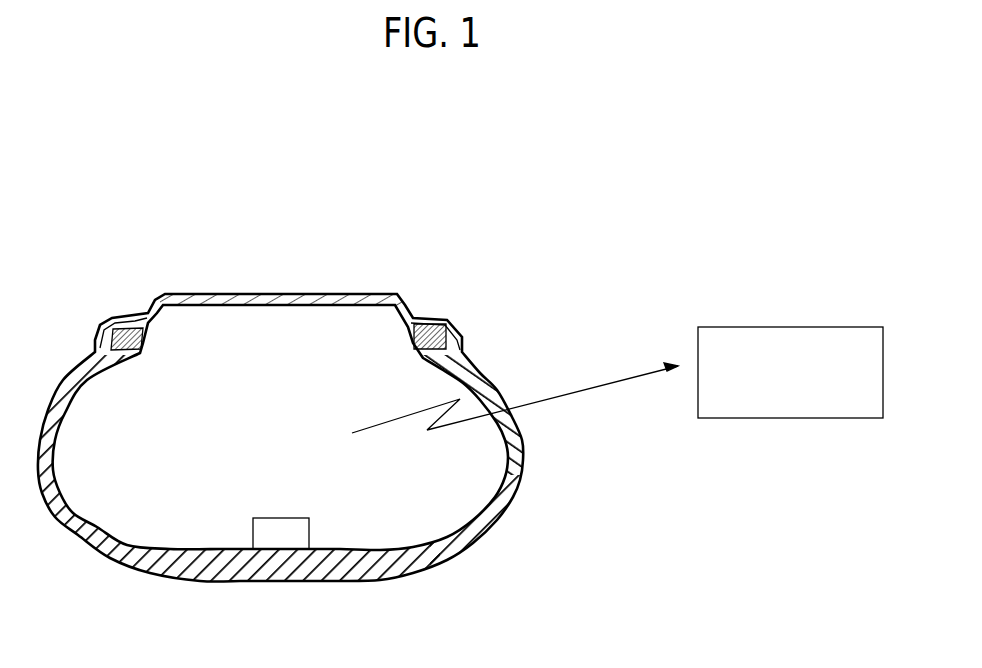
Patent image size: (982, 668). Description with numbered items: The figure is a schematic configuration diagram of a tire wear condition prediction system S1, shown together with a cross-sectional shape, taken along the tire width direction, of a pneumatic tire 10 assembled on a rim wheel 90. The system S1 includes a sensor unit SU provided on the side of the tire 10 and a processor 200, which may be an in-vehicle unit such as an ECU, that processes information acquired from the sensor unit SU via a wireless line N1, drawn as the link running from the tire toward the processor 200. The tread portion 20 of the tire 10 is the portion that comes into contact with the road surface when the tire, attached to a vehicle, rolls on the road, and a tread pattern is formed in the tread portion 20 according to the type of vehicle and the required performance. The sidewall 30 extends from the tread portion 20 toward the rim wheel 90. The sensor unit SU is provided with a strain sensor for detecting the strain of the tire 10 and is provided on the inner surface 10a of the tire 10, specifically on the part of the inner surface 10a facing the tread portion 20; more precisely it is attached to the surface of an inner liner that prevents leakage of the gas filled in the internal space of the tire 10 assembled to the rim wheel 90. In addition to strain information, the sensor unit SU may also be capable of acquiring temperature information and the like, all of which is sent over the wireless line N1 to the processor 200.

The pneumatic tire 10 is at (487, 363).
The inner surface 10a is at (340, 537).
The tread portion 20 is at (287, 582).
The sidewall portion 30 is at (520, 465).
The rim wheel 90 is at (356, 294).
The sensor unit SU is at (283, 516).
The wireless line N1 is at (515, 385).
The processor 200 is at (808, 326).
The tire wear condition prediction system S1 is at (685, 213).